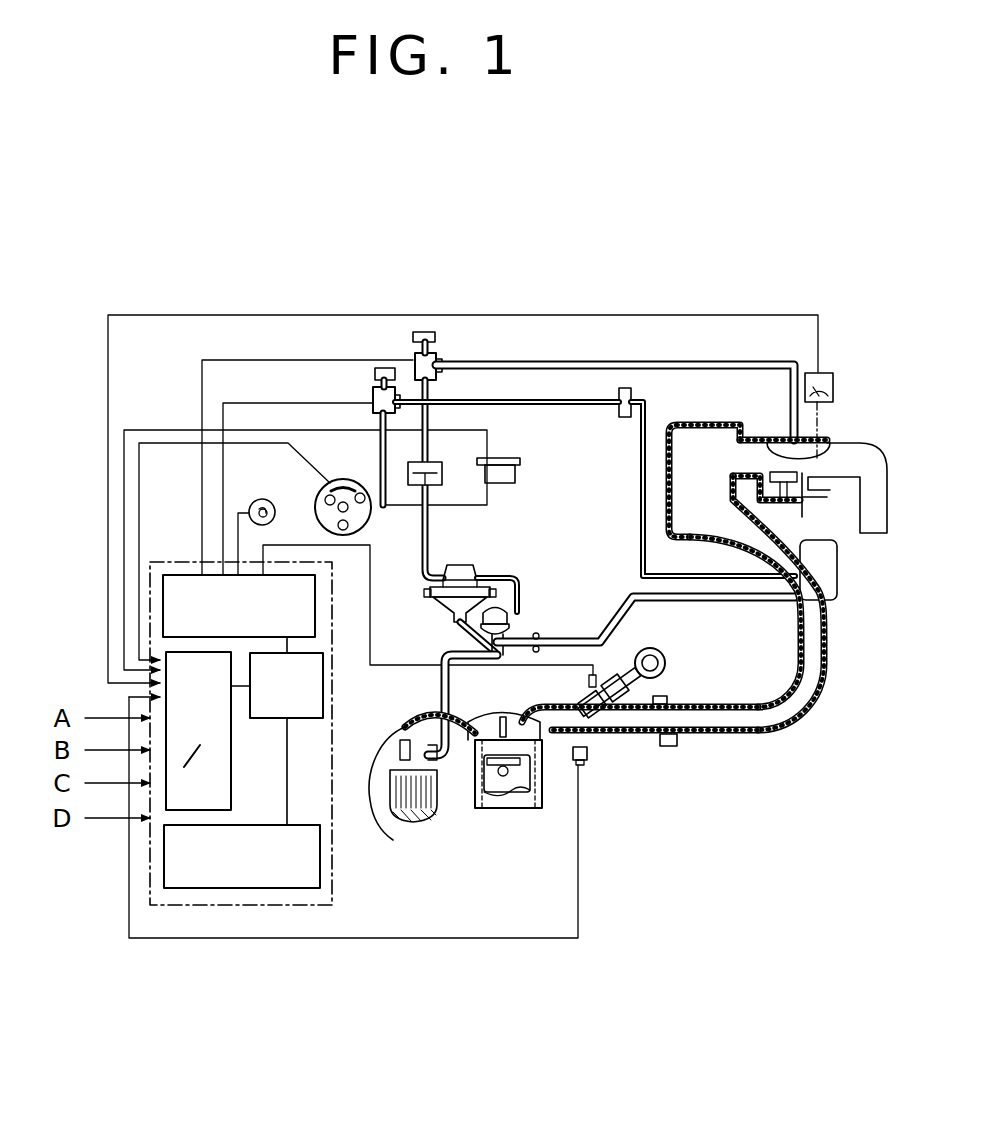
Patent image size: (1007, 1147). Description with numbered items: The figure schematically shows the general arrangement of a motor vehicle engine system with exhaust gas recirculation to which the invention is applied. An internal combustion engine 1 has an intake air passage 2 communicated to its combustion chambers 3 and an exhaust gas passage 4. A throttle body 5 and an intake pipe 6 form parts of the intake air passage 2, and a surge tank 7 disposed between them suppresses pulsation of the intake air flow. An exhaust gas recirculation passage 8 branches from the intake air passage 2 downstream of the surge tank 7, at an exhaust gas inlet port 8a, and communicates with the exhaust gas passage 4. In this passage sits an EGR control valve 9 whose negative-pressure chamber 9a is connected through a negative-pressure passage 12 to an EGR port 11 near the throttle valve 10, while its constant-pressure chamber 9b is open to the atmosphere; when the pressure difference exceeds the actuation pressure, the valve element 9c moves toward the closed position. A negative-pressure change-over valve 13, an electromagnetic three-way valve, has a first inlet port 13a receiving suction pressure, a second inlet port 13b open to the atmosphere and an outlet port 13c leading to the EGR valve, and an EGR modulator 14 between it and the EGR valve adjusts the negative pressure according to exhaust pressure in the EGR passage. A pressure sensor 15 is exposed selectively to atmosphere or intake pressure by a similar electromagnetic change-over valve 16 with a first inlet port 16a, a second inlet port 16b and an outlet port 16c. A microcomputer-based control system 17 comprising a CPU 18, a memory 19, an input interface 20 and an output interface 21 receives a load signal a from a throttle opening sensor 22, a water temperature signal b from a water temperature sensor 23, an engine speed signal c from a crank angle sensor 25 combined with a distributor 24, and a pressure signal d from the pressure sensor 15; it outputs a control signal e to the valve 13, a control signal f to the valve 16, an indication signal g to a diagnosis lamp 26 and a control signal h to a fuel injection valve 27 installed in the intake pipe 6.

The internal combustion engine 1 is at (516, 800).
The intake air passage 2 is at (742, 716).
The combustion chambers 3 is at (503, 812).
The exhaust gas passage 4 is at (393, 840).
The throttle body 5 is at (832, 570).
The intake pipe 6 is at (633, 736).
The surge tank 7 is at (686, 425).
The exhaust gas recirculation passage 8 is at (440, 695).
The exhaust gas inlet port 8a is at (790, 556).
The exhaust gas recirculation control valve 9 is at (517, 592).
The negative-pressure chamber 9a is at (500, 585).
The constant-pressure chamber 9b is at (511, 633).
The valve element 9c is at (460, 624).
The throttle valve 10 is at (787, 462).
The EGR port 11 is at (830, 441).
The negative-pressure passage 12 is at (650, 362).
The negative-pressure change-over valve 13 is at (418, 330).
The first inlet port 13a is at (438, 363).
The second inlet port 13b is at (437, 347).
The outlet port 13c is at (433, 326).
The EGR modulator 14 is at (462, 566).
The pressure sensor 15 is at (510, 458).
The electromagnetic change-over valve 16 is at (362, 380).
The first inlet port 16a is at (396, 398).
The second inlet port 16b is at (381, 366).
The outlet port 16c is at (378, 422).
The control system 17 is at (333, 878).
The CPU 18 is at (323, 681).
The memory 19 is at (320, 850).
The input interface 20 is at (170, 812).
The output interface 21 is at (315, 603).
The throttle opening sensor 22 is at (833, 373).
The water temperature sensor 23 is at (587, 758).
The distributor 24 is at (363, 527).
The crank angle sensor 25 is at (343, 480).
The diagnosis lamp 26 is at (262, 499).
The fuel injection valve 27 is at (655, 680).
The load signal a is at (187, 315).
The water temperature signal b is at (226, 938).
The engine speed signal c is at (172, 443).
The pressure signal d is at (167, 430).
The control signal e is at (201, 510).
The control signal f is at (222, 545).
The indication signal g is at (246, 544).
The control signal h is at (273, 545).